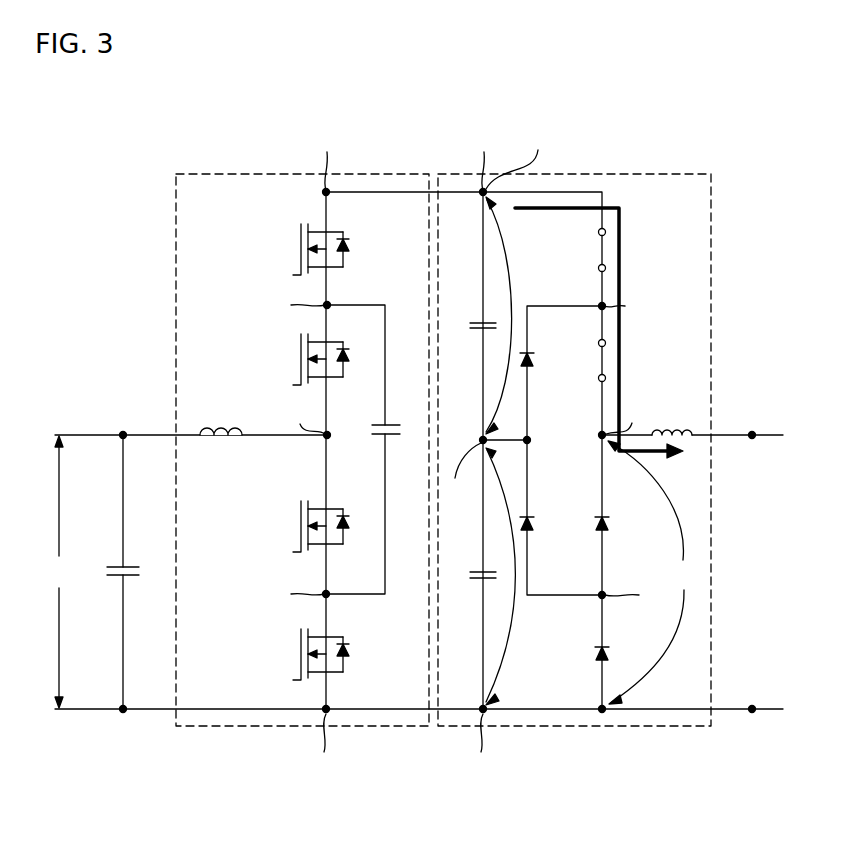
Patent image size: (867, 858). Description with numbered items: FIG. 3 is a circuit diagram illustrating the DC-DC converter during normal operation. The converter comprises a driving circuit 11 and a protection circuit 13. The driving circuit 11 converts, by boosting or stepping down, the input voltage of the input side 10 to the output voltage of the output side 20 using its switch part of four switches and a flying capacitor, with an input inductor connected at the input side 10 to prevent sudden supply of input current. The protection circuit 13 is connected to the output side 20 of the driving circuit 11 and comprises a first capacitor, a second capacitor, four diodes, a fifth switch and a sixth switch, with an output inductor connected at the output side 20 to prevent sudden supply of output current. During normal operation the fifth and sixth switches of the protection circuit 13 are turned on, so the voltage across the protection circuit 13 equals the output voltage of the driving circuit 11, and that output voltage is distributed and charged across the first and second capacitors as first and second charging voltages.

The input side 10 is at (233, 273).
The driving circuit 11 is at (224, 174).
The protection circuit 13 is at (631, 174).
The output side 20 is at (372, 283).